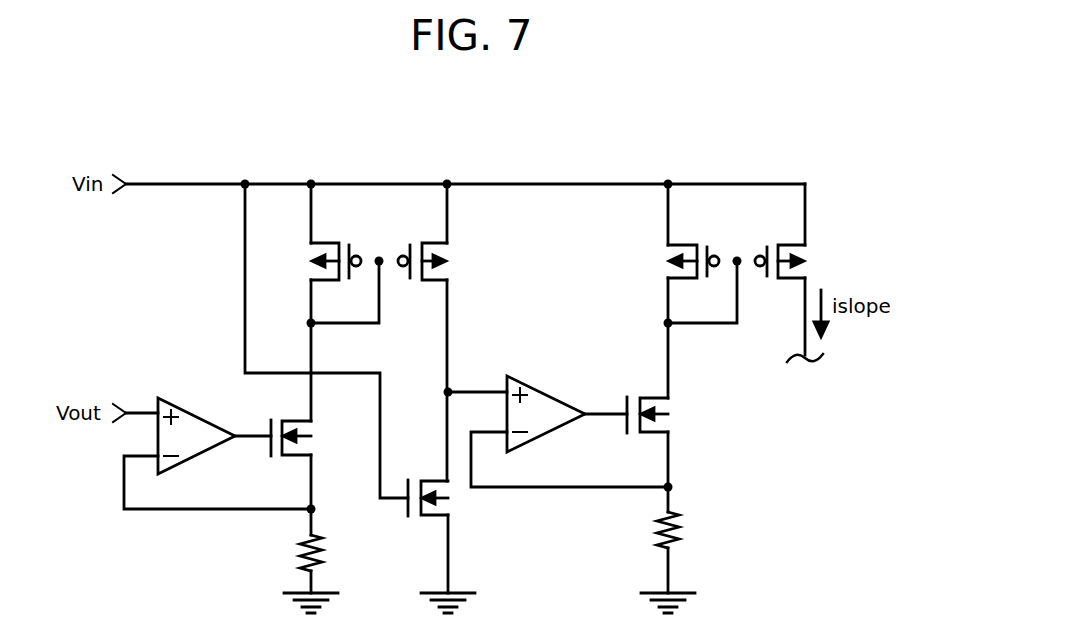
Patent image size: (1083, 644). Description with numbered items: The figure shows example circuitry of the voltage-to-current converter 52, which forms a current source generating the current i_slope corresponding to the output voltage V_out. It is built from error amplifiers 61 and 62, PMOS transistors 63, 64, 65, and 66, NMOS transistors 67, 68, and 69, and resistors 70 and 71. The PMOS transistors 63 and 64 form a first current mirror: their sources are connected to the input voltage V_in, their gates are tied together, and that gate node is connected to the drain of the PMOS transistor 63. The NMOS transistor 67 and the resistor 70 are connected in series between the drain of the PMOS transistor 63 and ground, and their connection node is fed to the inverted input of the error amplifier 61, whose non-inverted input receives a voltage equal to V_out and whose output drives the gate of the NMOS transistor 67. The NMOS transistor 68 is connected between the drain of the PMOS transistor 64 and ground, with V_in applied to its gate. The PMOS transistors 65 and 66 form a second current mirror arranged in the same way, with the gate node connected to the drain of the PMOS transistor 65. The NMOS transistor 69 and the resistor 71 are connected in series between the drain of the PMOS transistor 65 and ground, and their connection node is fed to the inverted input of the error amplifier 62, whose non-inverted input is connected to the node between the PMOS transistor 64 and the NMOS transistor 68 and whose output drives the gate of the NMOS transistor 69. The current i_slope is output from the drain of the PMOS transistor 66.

The voltage-to-current converter 52 is at (590, 145).
The error amplifier 61 is at (192, 410).
The error amplifier 62 is at (548, 390).
The PMOS transistor 63 is at (334, 240).
The PMOS transistor 64 is at (423, 240).
The PMOS transistor 65 is at (699, 238).
The PMOS transistor 66 is at (780, 238).
The NMOS transistor 67 is at (322, 438).
The NMOS transistor 68 is at (429, 523).
The NMOS transistor 69 is at (645, 392).
The resistor 70 is at (300, 552).
The resistor 71 is at (657, 530).